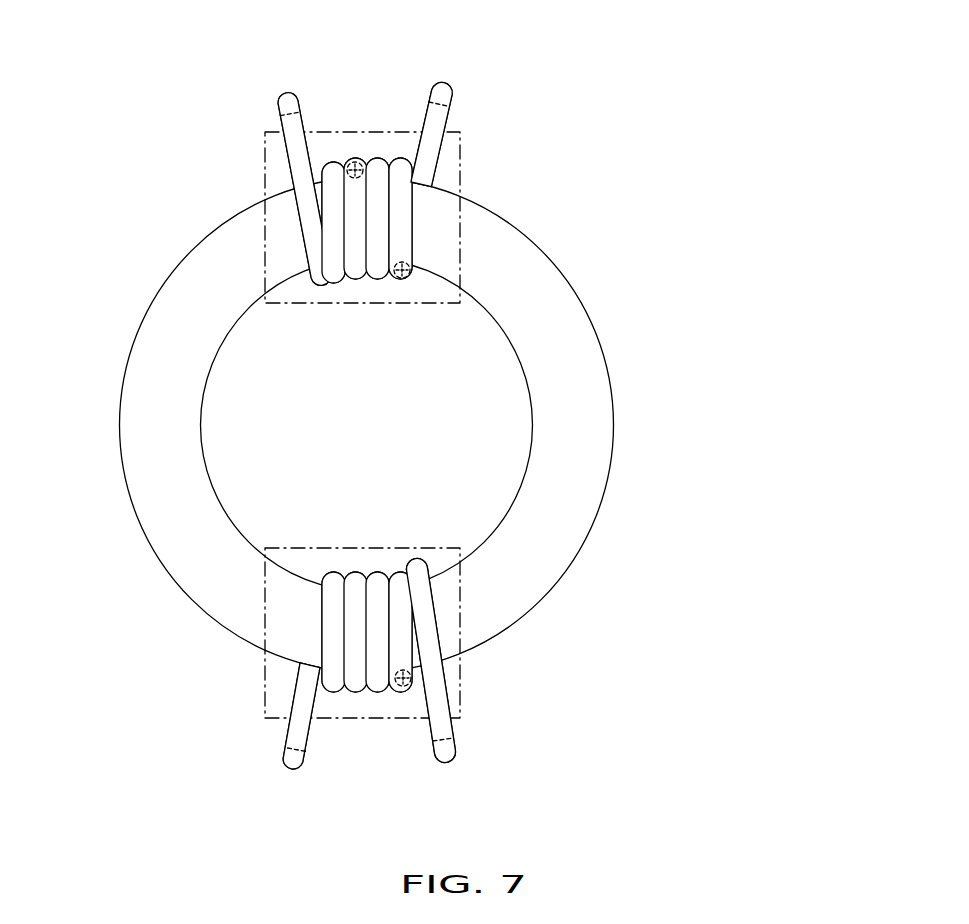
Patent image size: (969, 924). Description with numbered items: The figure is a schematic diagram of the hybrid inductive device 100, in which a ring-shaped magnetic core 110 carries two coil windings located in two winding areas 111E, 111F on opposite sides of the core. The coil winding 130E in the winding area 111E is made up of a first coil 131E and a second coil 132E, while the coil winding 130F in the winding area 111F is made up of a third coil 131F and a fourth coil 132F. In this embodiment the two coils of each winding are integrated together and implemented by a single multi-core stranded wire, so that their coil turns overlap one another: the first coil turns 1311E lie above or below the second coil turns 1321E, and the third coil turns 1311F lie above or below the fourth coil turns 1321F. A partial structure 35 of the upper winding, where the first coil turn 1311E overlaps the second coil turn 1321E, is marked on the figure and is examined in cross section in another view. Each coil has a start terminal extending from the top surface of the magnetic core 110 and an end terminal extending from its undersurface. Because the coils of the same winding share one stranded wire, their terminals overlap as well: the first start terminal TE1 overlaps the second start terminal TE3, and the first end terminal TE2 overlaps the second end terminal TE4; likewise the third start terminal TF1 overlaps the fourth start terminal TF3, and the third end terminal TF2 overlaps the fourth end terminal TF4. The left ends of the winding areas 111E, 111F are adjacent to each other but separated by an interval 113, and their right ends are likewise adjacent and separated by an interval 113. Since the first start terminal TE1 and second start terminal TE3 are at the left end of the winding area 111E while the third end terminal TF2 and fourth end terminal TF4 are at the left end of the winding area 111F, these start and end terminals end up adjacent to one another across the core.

The hybrid inductive device 100 is at (62, 93).
The magnetic core 110 is at (549, 259).
The interval 113 is at (590, 441).
The winding area 111E is at (462, 176).
The winding area 111F is at (364, 548).
The coil winding 130E is at (752, 218).
The first coil 131E is at (834, 185).
The second coil 132E is at (834, 298).
The first coil turns 1311E is at (340, 200).
The second coil turns 1321E is at (350, 172).
The first start terminal TE1 is at (289, 120).
The first end terminal TE2 is at (452, 95).
The second start terminal TE3 is at (285, 100).
The second end terminal TE4 is at (451, 118).
The partial structure 35 is at (352, 165).
The coil winding 130F is at (752, 518).
The third coil 131F is at (834, 485).
The fourth coil 132F is at (834, 598).
The third coil turns 1311F is at (412, 686).
The fourth coil turns 1321F is at (445, 663).
The third start terminal TF1 is at (453, 730).
The third end terminal TF2 is at (288, 758).
The fourth start terminal TF3 is at (453, 760).
The fourth end terminal TF4 is at (294, 742).